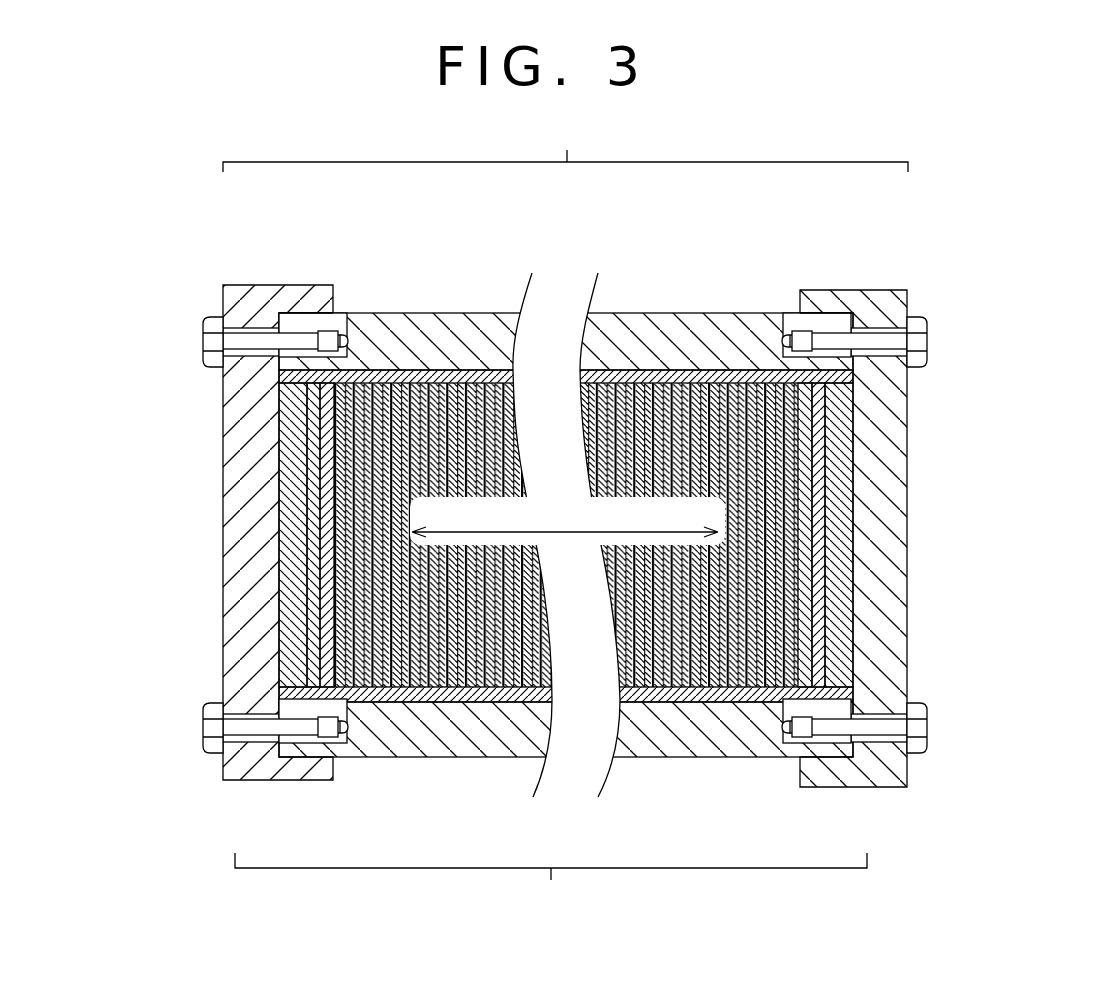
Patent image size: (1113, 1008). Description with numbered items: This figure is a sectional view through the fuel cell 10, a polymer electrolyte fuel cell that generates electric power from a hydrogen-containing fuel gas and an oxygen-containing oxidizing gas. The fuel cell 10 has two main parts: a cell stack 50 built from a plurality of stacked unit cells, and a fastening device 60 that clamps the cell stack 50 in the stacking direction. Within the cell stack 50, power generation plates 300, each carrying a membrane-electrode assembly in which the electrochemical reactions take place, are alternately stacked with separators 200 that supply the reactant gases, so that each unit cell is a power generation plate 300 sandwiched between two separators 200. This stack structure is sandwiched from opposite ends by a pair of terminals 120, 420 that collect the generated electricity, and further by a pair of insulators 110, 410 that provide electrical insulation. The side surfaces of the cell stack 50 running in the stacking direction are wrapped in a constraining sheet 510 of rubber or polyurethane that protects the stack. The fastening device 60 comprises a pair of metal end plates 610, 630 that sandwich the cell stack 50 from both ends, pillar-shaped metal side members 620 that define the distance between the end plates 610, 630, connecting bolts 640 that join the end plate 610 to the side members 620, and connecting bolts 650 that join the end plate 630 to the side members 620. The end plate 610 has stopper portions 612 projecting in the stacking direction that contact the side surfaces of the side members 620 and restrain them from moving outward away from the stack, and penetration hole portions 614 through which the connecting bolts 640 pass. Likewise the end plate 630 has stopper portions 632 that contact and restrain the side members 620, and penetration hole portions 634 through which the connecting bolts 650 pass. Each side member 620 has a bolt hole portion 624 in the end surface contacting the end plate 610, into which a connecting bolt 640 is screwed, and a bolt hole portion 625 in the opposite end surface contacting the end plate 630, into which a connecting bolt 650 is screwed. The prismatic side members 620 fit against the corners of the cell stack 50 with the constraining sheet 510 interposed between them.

The fuel cell 10 is at (1015, 178).
The cell stack 50 is at (551, 882).
The fastening device 60 is at (565, 147).
The insulator 110 is at (302, 665).
The terminal 120 is at (315, 670).
The separator 200 is at (413, 688).
The power generation plate 300 is at (437, 688).
The insulator 410 is at (840, 665).
The terminal 420 is at (812, 670).
The constraining sheet 510 is at (830, 377).
The end plate 610 is at (247, 302).
The stopper portion 612 is at (352, 313).
The penetration hole portion 614 is at (247, 327).
The side member 620 is at (469, 342).
The bolt hole portion 624 is at (317, 333).
The bolt hole portion 625 is at (783, 327).
The end plate 630 is at (877, 313).
The stopper portion 632 is at (800, 320).
The penetration hole portion 634 is at (880, 318).
The connecting bolt 640 is at (203, 332).
The connecting bolt 650 is at (930, 333).